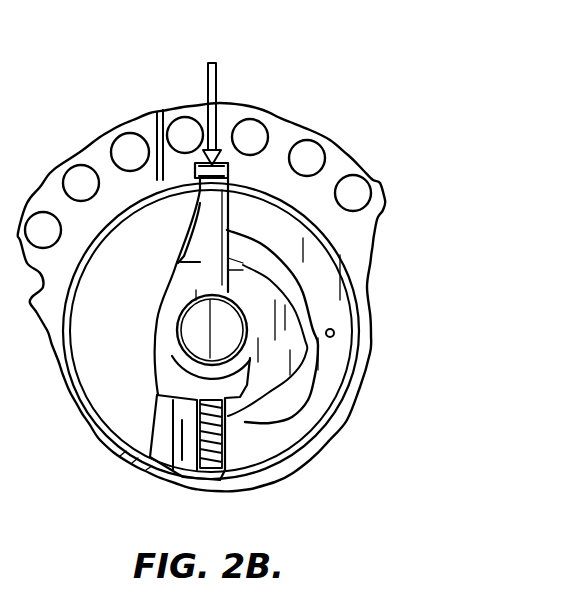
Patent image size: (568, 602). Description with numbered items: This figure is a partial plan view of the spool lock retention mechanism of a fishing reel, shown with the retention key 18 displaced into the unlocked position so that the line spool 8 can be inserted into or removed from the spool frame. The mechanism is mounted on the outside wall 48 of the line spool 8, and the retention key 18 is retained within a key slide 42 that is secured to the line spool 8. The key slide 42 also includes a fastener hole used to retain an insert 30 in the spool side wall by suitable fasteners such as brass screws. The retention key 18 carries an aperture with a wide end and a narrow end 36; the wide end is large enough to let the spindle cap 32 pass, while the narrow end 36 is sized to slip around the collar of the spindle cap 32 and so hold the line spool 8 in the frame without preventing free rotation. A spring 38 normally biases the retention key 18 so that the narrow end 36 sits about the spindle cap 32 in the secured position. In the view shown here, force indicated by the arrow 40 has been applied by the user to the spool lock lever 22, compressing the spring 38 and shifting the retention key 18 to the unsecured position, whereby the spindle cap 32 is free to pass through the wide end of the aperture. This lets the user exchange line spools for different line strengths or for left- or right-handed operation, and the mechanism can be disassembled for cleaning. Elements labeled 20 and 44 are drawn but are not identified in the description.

The line spool 8 is at (97, 152).
The retention key 18 is at (287, 328).
The spring 20 is at (235, 425).
The spool lock lever 22 is at (228, 195).
The insert 30 is at (110, 378).
The spindle cap 32 is at (231, 320).
The narrow end 36 is at (245, 370).
The spring 38 is at (185, 475).
The arrow 40 is at (217, 80).
The key slide 42 is at (290, 250).
The pin hole 44 is at (334, 333).
The outside wall 48 is at (163, 110).